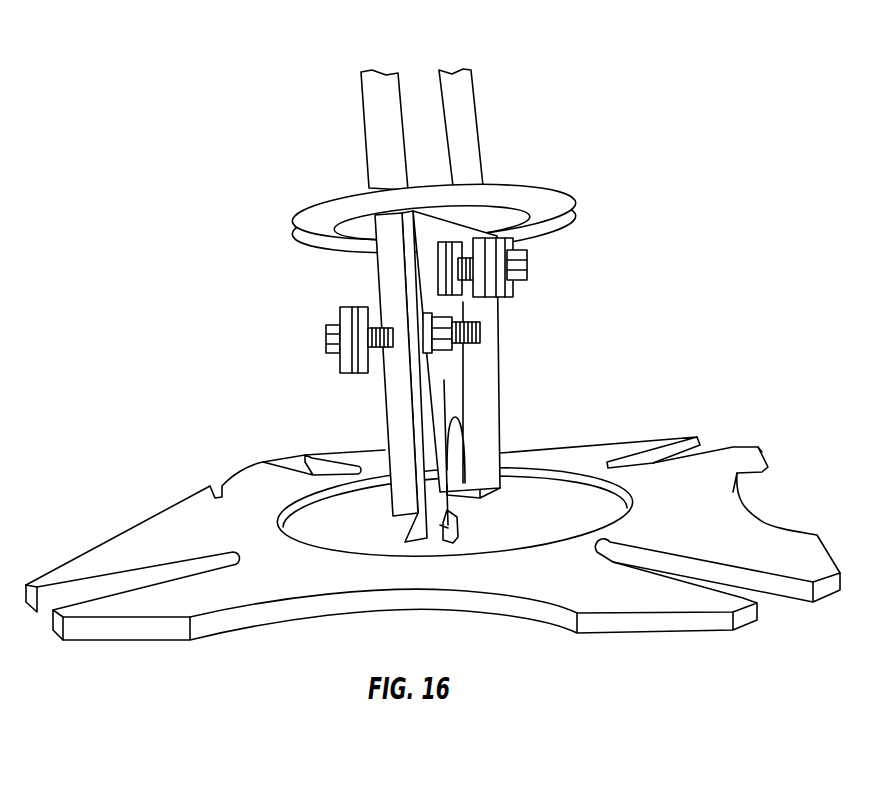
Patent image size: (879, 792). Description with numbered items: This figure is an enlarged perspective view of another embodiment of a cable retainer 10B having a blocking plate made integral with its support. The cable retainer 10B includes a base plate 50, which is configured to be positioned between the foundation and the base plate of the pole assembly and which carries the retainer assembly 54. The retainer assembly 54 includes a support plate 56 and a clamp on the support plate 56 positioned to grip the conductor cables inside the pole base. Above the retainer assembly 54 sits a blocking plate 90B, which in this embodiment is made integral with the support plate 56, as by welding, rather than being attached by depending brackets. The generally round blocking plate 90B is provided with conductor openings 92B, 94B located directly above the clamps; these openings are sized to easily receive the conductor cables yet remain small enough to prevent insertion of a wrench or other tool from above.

The cable retainer 10B is at (620, 370).
The base plate 50 is at (750, 520).
The retainer assembly 54 is at (417, 396).
The support plate 56 is at (455, 385).
The blocking plate 90B is at (451, 227).
The conductor opening 92B is at (513, 240).
The conductor opening 94B is at (345, 232).